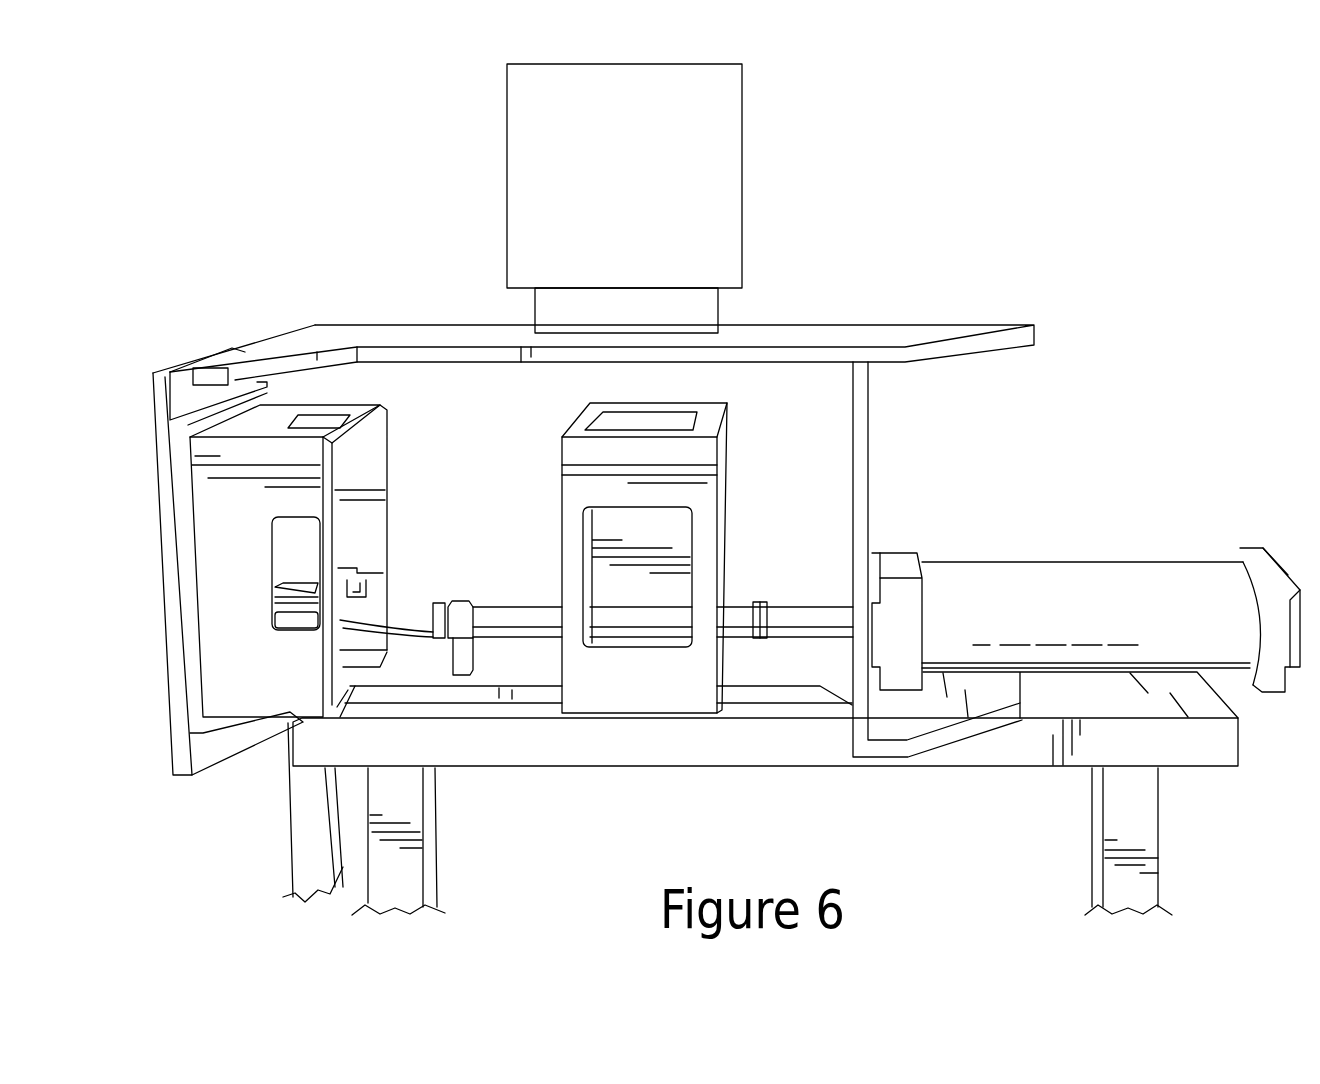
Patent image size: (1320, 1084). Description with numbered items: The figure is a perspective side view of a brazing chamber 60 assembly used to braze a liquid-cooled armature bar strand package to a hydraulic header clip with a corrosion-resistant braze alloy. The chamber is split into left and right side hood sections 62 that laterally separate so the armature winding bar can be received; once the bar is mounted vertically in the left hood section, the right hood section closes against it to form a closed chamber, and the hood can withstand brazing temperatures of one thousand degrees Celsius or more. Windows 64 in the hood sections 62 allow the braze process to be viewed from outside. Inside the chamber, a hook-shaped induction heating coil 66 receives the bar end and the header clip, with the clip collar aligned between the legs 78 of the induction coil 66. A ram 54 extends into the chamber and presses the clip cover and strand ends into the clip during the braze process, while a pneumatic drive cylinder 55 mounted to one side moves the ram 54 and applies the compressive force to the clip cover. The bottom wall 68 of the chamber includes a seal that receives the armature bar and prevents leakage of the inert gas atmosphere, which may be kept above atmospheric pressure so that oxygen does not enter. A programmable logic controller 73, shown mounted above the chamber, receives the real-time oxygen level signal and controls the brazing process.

The brazing chamber 60 is at (960, 185).
The programmable logic controller 73 is at (717, 257).
The hood section 62 is at (244, 532).
The ram 54 is at (488, 617).
The pneumatic drive cylinder 55 is at (1072, 625).
The window 64 is at (648, 588).
The induction heating coil 66 is at (290, 600).
The legs of the induction coil 78 is at (290, 618).
The bottom wall 68 is at (240, 722).